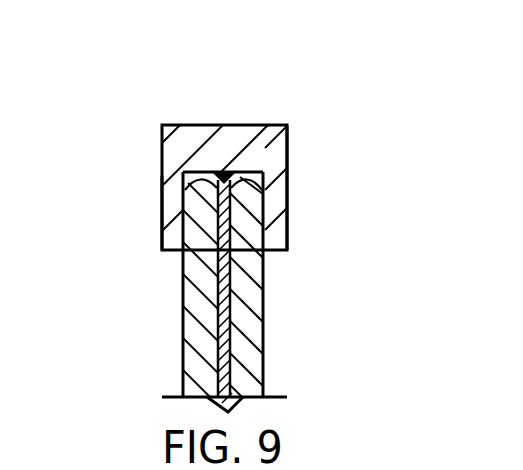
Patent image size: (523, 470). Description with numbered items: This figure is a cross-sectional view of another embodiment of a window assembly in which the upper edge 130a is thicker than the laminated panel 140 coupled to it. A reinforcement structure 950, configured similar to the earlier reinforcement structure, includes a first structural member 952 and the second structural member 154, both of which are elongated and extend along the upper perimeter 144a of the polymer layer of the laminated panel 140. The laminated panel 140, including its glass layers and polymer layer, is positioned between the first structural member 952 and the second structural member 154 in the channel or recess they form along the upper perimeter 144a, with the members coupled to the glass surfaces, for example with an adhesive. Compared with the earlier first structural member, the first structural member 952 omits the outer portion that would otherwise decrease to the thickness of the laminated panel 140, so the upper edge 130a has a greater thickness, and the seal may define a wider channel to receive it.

The reinforcement structure 950 is at (141, 86).
The first structural member 952 is at (162, 144).
The upper edge 130a is at (230, 125).
The upper perimeter 144a is at (262, 148).
The second structural member 154 is at (287, 192).
The laminated panel 140 is at (183, 272).